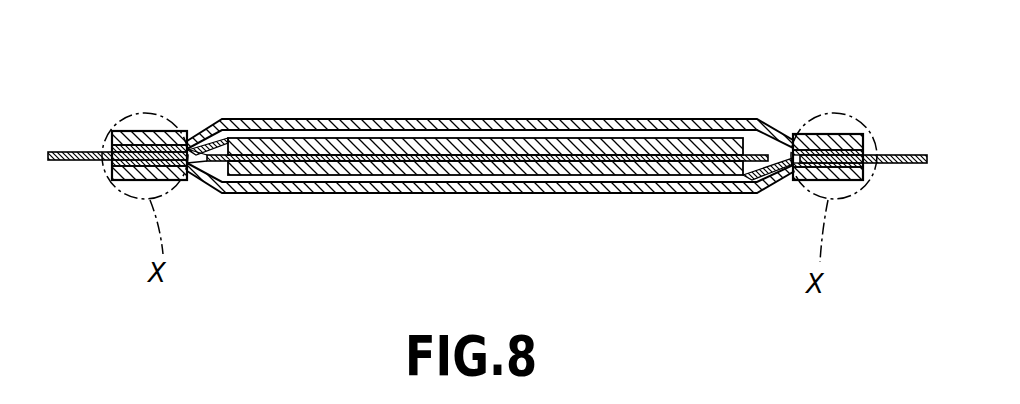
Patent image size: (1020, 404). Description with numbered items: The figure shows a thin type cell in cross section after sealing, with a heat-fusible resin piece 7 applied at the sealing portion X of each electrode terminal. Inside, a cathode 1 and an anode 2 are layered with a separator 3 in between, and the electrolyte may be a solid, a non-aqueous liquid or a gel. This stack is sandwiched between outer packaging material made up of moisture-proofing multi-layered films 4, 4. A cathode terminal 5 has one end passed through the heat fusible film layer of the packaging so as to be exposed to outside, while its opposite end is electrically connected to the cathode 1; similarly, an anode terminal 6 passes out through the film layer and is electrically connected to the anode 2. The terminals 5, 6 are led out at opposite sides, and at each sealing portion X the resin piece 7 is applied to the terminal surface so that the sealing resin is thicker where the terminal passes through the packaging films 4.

The cathode 1 is at (535, 168).
The anode 2 is at (399, 147).
The separator 3 is at (361, 157).
The moisture-proofing multi-layered film 4 is at (631, 128).
The cathode terminal 5 is at (903, 153).
The anode terminal 6 is at (77, 152).
The heat-fusible resin piece 7 is at (163, 133).